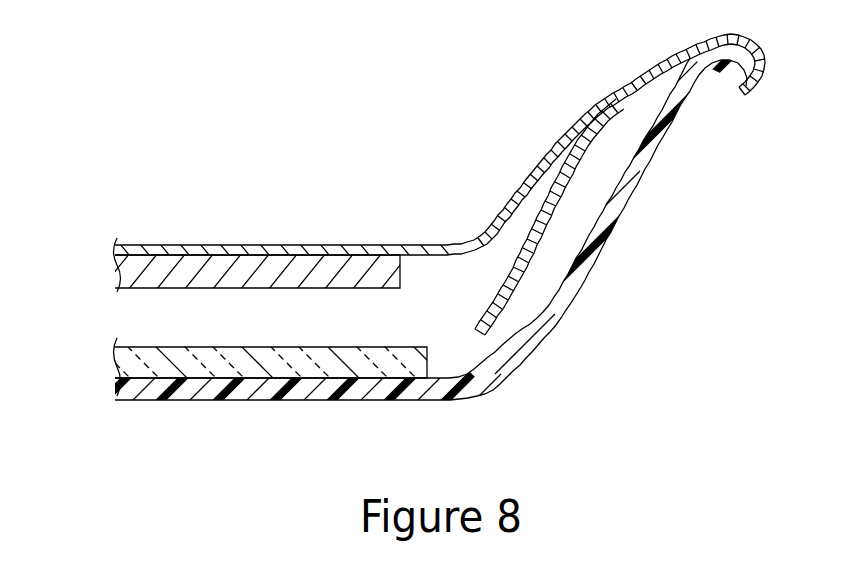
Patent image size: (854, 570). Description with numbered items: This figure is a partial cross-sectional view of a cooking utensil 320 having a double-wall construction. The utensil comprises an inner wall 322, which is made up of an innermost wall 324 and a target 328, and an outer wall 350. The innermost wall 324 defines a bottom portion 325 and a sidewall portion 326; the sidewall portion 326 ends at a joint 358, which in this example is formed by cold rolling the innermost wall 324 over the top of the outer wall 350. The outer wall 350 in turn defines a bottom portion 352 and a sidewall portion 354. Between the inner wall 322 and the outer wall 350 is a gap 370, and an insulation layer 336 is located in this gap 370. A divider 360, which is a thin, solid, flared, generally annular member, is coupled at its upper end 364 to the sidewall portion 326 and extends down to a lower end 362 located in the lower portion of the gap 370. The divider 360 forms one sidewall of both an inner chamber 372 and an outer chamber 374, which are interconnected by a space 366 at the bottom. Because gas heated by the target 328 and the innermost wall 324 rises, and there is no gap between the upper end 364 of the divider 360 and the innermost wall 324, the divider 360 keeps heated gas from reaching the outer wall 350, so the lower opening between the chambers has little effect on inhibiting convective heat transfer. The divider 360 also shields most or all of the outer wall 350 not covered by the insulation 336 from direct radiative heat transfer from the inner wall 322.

The cooking utensil 320 is at (449, 182).
The inner wall 322 is at (229, 232).
The innermost wall 324 is at (383, 232).
The bottom portion 325 is at (273, 243).
The sidewall portion 326 is at (651, 78).
The target 328 is at (200, 283).
The insulation layer 336 is at (162, 362).
The outer wall 350 is at (423, 244).
The bottom portion 352 is at (288, 400).
The sidewall portion 354 is at (652, 145).
The joint 358 is at (760, 78).
The divider 360 is at (513, 211).
The lower end 362 is at (490, 304).
The upper end 364 is at (593, 120).
The space 366 is at (455, 348).
The gap 370 is at (146, 318).
The inner chamber 372 is at (329, 328).
The outer chamber 374 is at (567, 222).